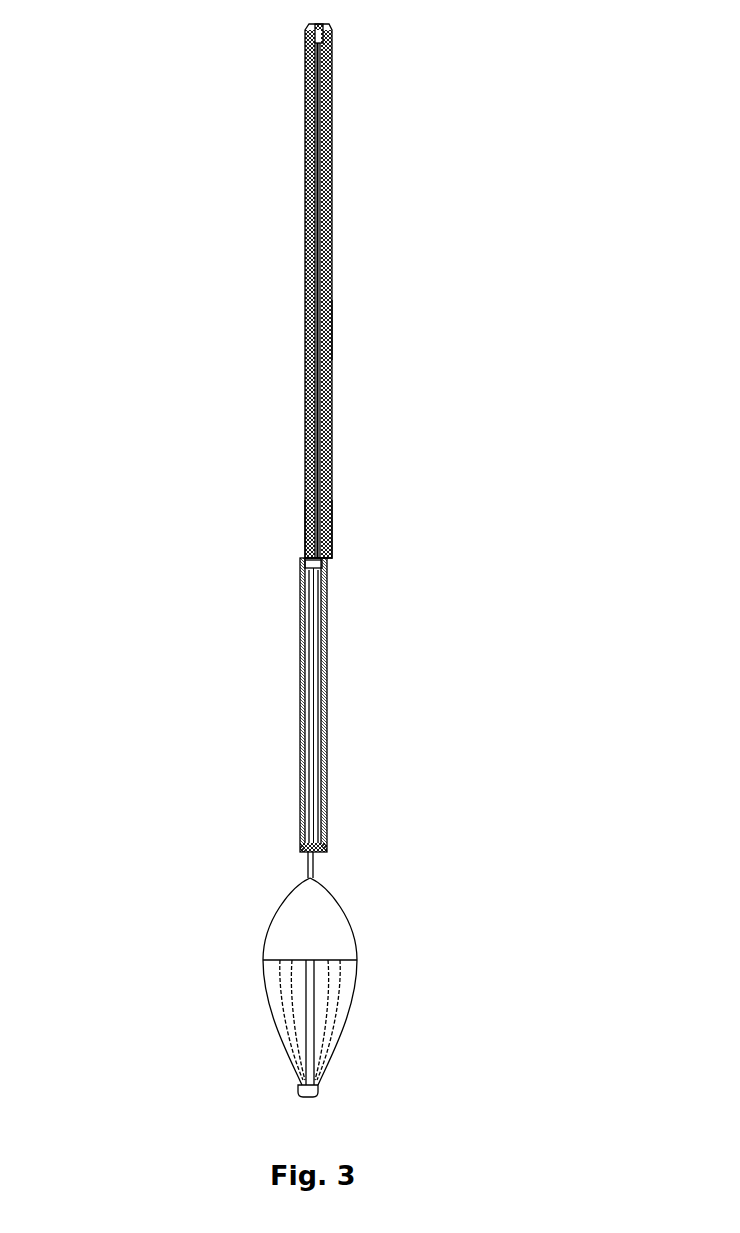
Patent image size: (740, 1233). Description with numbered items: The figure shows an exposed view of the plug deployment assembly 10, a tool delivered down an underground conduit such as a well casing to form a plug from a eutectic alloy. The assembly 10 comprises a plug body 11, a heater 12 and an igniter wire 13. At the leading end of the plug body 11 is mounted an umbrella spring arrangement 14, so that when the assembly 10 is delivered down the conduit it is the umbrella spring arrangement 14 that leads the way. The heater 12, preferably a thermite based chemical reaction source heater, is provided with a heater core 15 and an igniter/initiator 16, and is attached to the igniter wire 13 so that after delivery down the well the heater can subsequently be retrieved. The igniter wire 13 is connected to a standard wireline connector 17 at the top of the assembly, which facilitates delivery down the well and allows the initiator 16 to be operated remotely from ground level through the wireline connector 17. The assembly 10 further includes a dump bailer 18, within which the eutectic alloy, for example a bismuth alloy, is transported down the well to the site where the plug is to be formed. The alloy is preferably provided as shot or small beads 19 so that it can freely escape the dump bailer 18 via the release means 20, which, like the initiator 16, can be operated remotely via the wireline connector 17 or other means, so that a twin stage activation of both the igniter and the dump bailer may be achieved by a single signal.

The plug deployment assembly 10 is at (228, 420).
The plug body 11 is at (327, 747).
The heater 12 is at (320, 680).
The igniter wire 13 is at (320, 64).
The umbrella spring arrangement 14 is at (320, 892).
The heater core 15 is at (313, 598).
The igniter/initiator 16 is at (310, 566).
The wireline connector 17 is at (323, 30).
The dump bailer 18 is at (331, 328).
The shot or small beads 19 is at (322, 183).
The release means 20 is at (330, 523).